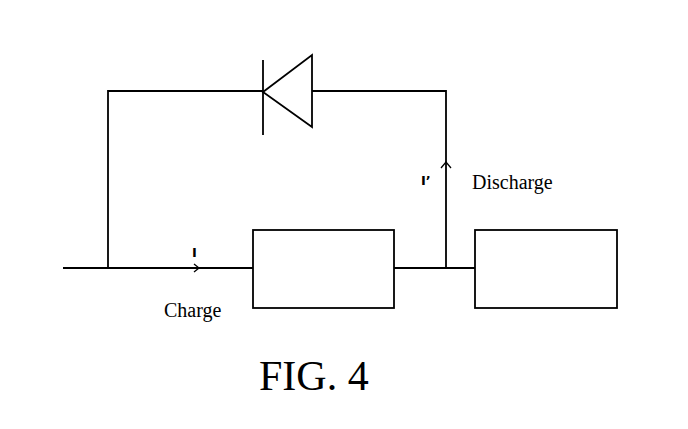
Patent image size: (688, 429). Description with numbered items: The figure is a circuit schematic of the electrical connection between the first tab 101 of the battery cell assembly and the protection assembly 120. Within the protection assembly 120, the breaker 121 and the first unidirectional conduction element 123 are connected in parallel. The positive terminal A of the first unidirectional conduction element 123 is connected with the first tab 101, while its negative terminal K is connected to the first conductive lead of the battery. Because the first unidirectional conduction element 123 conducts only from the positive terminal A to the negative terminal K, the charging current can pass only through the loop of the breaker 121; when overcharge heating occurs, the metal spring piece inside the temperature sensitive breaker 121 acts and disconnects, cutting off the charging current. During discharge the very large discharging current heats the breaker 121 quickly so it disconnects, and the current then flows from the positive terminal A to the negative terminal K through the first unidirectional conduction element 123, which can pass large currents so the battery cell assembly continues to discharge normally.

The protection assembly 120 is at (78, 147).
The first unidirectional conduction element 123 is at (281, 77).
The negative terminal K is at (260, 106).
The positive terminal A is at (313, 98).
The breaker 121 is at (323, 269).
The first tab 101 is at (546, 269).